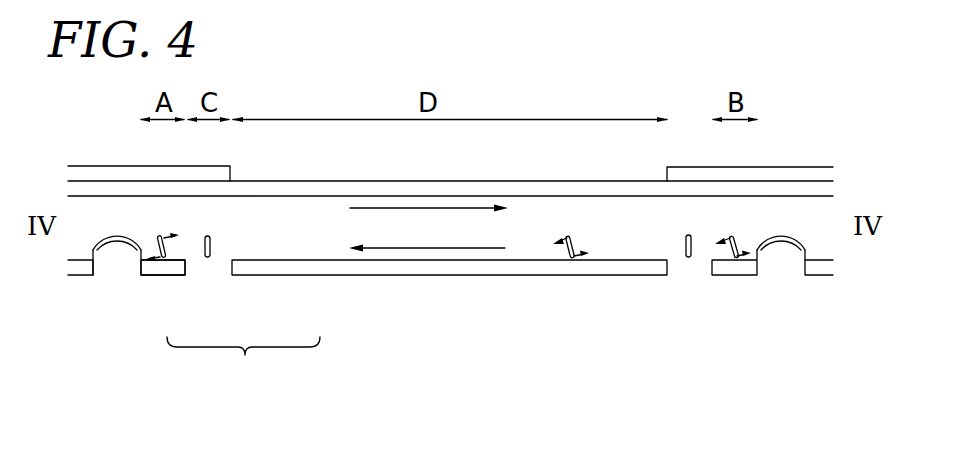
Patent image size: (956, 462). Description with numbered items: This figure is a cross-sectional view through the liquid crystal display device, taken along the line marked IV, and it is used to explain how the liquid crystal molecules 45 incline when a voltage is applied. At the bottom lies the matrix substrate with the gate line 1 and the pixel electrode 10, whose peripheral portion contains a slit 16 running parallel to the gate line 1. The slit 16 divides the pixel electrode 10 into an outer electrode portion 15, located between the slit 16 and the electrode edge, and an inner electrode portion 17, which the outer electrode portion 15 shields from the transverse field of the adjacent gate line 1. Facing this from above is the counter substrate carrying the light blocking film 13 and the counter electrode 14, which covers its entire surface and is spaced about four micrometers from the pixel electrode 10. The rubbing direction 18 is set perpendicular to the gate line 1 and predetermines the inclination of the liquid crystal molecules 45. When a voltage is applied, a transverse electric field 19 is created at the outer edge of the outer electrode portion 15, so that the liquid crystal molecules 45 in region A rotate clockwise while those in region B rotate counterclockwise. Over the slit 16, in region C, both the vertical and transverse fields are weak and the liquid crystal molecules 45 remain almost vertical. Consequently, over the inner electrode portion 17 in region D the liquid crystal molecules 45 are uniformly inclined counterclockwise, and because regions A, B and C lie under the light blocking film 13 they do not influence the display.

The gate line 1 is at (80, 272).
The pixel electrode 10 is at (243, 364).
The light blocking film 13 is at (105, 170).
The counter electrode 14 is at (588, 196).
The outer electrode portion 15 is at (170, 273).
The slit 16 is at (207, 275).
The inner electrode portion 17 is at (313, 273).
The rubbing direction 18 is at (430, 247).
The transverse electric field 19 is at (115, 269).
The liquid crystal molecules 45 is at (213, 243).